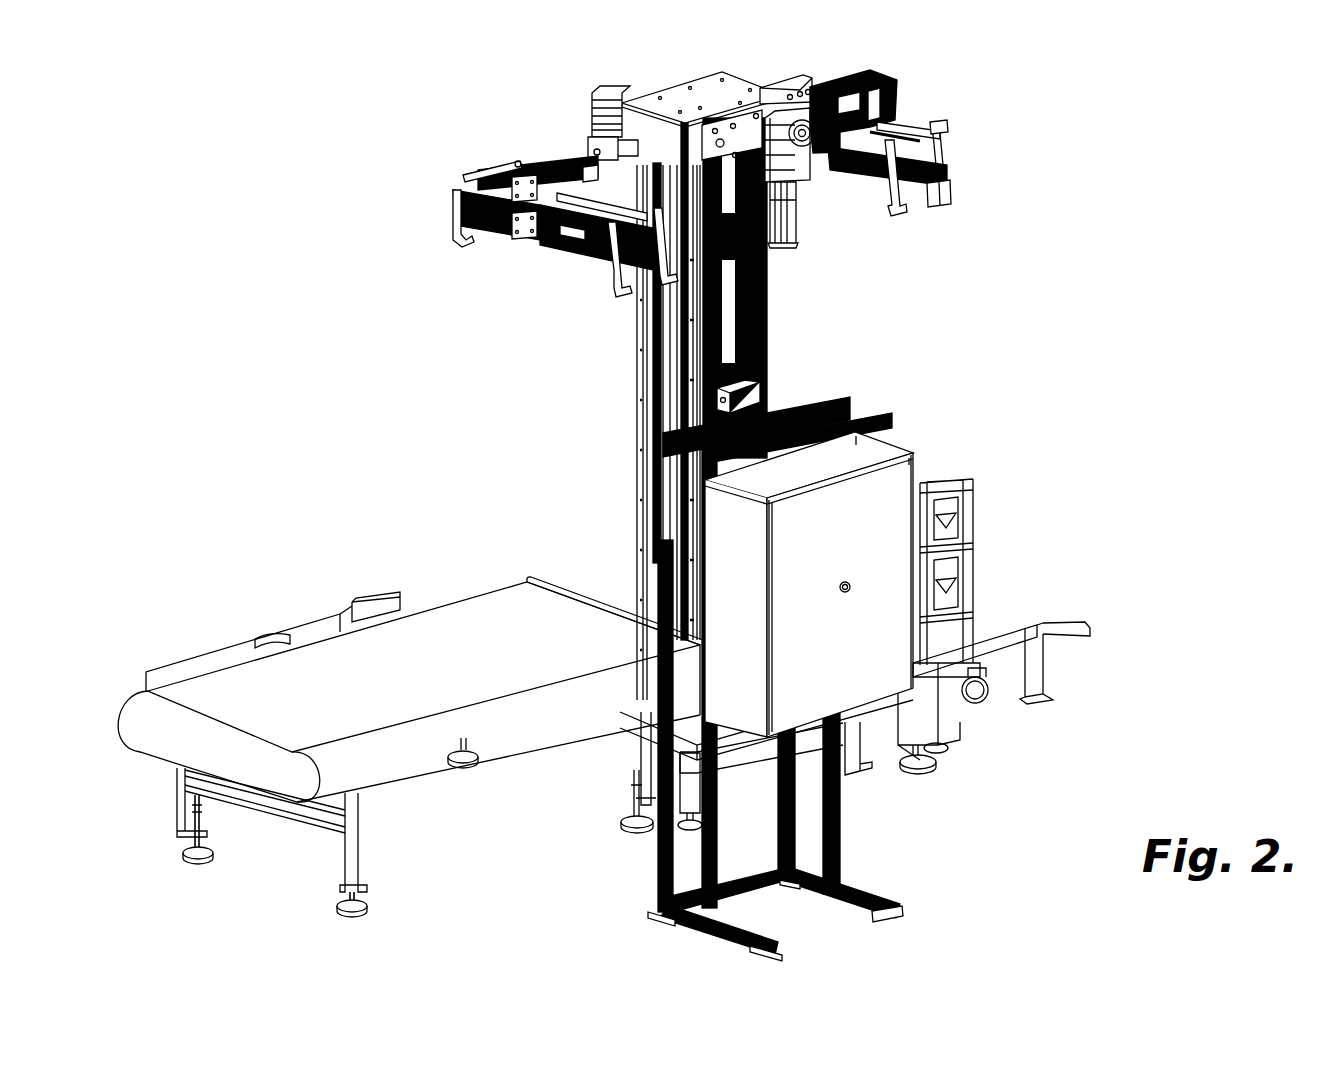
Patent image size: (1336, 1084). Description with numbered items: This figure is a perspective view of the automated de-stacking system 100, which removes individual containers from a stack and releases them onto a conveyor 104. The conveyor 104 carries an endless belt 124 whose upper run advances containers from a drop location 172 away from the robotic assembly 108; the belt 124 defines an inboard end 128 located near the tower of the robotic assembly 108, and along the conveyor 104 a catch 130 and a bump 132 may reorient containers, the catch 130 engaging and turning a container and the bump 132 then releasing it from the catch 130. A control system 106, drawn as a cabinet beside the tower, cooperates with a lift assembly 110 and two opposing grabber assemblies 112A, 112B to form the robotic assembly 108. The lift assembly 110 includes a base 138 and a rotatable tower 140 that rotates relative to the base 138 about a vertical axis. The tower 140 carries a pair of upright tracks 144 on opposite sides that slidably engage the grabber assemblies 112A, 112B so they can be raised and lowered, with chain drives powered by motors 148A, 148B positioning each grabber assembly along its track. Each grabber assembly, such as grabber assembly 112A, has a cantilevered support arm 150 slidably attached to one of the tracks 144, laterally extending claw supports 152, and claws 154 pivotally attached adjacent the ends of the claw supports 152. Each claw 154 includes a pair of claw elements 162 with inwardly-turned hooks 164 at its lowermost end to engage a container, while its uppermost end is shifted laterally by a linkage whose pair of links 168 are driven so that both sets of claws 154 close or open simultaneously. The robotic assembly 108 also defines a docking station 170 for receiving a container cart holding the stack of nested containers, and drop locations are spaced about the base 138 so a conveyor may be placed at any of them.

The automated de-stacking system 100 is at (1080, 264).
The conveyor 104 is at (416, 593).
The control system 106 is at (904, 438).
The robotic assembly 108 is at (584, 81).
The lift assembly 110 is at (670, 72).
The grabber assembly 112A is at (907, 78).
The grabber assembly 112B is at (443, 180).
The endless belt 124 is at (453, 603).
The inboard end 128 is at (544, 574).
The catch 130 is at (353, 589).
The bump 132 is at (243, 636).
The base 138 is at (862, 772).
The rotatable tower 140 is at (624, 341).
The upright tracks 144 is at (668, 402).
The motor 148A is at (808, 186).
The motor 148B is at (587, 121).
The cantilevered support arm 150 is at (847, 77).
The claw supports 152 is at (847, 188).
The claws 154 is at (965, 192).
The claw elements 162 is at (957, 141).
The inwardly-turned hooks 164 is at (907, 223).
The links 168 is at (912, 122).
The docking station 170 is at (1076, 606).
The drop location 172 is at (513, 596).